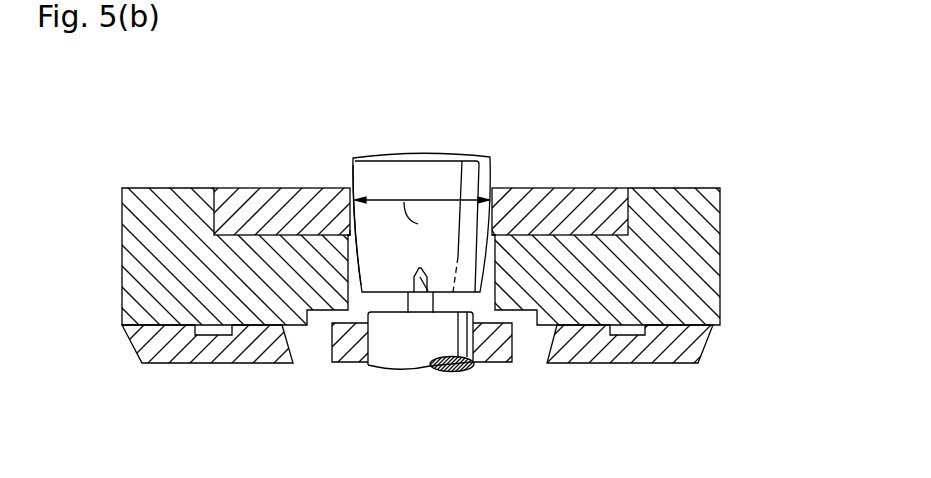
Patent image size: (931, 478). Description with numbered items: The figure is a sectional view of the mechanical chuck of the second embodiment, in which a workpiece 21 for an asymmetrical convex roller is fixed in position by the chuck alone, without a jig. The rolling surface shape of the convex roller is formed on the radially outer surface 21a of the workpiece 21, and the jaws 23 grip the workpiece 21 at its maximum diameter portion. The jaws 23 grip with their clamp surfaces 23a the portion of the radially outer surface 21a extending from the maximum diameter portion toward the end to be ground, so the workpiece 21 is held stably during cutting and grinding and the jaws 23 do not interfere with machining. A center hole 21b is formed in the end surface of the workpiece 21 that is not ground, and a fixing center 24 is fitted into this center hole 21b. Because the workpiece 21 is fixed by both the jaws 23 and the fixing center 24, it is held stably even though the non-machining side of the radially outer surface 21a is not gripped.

The workpiece 21 is at (415, 175).
The radially outer surface 21a is at (350, 176).
The center hole 21b is at (420, 277).
The jaws 23 is at (214, 190).
The clamp surfaces 23a is at (360, 207).
The fixing center 24 is at (422, 313).